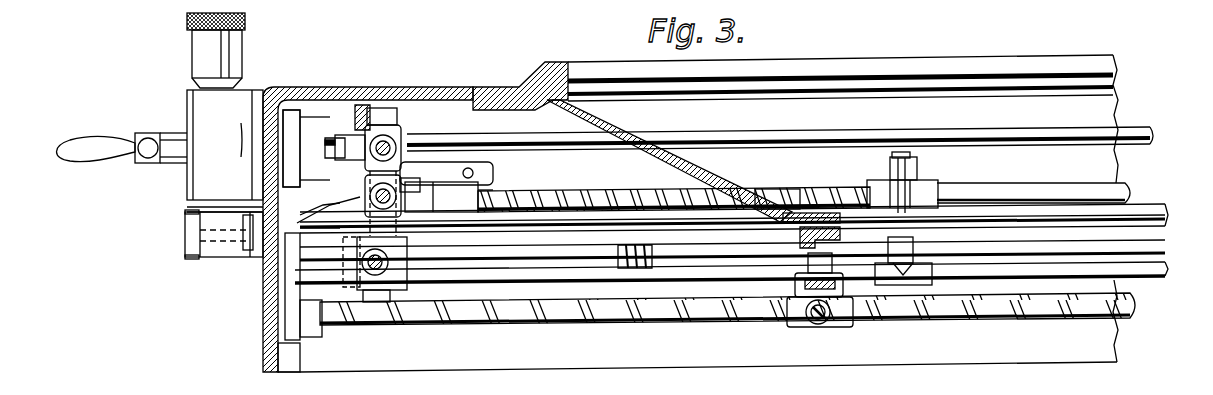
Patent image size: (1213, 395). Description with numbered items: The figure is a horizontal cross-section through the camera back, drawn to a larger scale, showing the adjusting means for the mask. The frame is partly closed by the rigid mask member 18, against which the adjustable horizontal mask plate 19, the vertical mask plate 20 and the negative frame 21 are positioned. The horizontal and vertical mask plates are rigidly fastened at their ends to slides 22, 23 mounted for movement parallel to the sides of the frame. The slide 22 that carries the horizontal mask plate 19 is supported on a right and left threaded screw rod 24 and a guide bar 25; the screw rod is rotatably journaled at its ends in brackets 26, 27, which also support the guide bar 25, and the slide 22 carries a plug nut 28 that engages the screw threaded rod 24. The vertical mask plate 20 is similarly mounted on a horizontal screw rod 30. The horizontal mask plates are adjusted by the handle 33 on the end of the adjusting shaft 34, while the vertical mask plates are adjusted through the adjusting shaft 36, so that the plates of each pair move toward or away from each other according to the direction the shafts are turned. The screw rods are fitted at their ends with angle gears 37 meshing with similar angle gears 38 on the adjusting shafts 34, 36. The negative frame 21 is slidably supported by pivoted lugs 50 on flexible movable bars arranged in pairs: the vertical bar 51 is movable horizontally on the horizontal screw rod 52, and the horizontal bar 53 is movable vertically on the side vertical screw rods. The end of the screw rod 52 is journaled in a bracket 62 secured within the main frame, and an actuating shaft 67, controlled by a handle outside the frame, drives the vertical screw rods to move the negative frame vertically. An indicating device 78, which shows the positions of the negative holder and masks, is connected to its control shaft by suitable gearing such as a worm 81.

The rigid mask member 18 is at (710, 180).
The horizontal mask plate 19 is at (583, 192).
The vertical mask plate 20 is at (1030, 218).
The negative frame 21 is at (800, 237).
The slide 22 is at (360, 173).
The slide 23 is at (863, 187).
The right and left threaded screw rod 24 is at (385, 140).
The guide bar 25 is at (330, 130).
The bracket 26 is at (308, 84).
The bracket 27 is at (262, 205).
The plug nut 28 is at (898, 155).
The horizontal screw rod 30 is at (760, 187).
The handle 33 is at (103, 130).
The adjusting shaft 34 is at (715, 118).
The adjusting shaft 36 is at (388, 188).
The angle gear 37 is at (398, 150).
The angle gear 38 is at (358, 128).
The pivoted lug 50 is at (925, 290).
The vertical bar 51 is at (783, 323).
The horizontal screw rod 52 is at (490, 328).
The horizontal bar 53 is at (693, 277).
The bracket 62 is at (310, 338).
The actuating shaft 67 is at (591, 259).
The indicating device 78 is at (247, 258).
The worm 81 is at (631, 268).